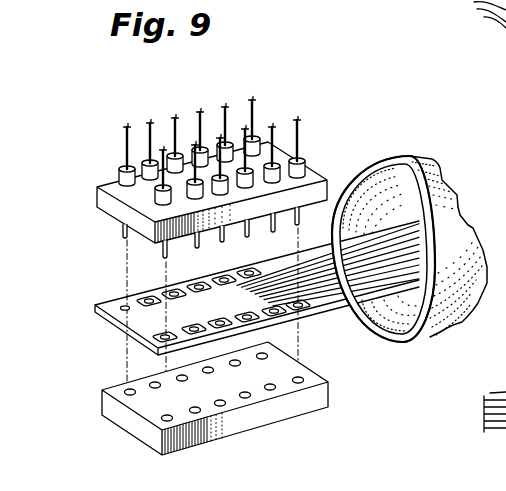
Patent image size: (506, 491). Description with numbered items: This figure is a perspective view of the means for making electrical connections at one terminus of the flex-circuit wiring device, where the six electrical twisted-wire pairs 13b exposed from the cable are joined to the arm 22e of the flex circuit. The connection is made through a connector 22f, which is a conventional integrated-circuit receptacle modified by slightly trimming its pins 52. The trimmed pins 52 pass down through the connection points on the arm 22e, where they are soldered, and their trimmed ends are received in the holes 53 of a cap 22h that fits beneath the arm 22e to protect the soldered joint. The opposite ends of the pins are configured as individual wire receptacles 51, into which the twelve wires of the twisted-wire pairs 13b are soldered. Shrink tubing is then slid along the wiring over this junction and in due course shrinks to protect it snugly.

The electrical twisted-wire pairs 13b is at (296, 140).
The wire receptacles 51 is at (118, 181).
The connector 22f is at (100, 200).
The pins 52 is at (196, 253).
The arm 22e is at (127, 320).
The cap 22h is at (194, 399).
The holes 53 is at (221, 404).